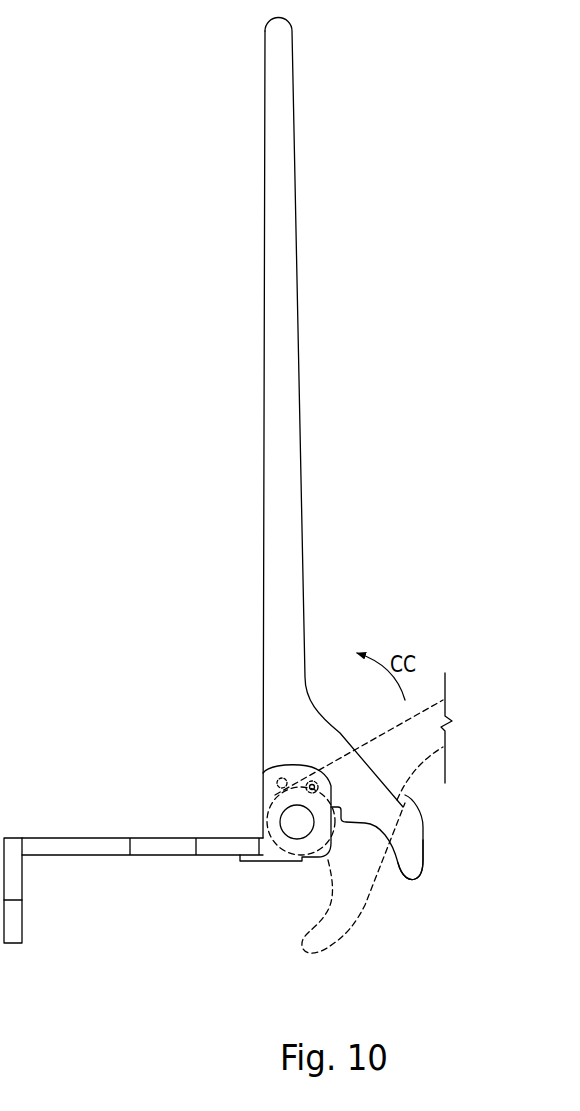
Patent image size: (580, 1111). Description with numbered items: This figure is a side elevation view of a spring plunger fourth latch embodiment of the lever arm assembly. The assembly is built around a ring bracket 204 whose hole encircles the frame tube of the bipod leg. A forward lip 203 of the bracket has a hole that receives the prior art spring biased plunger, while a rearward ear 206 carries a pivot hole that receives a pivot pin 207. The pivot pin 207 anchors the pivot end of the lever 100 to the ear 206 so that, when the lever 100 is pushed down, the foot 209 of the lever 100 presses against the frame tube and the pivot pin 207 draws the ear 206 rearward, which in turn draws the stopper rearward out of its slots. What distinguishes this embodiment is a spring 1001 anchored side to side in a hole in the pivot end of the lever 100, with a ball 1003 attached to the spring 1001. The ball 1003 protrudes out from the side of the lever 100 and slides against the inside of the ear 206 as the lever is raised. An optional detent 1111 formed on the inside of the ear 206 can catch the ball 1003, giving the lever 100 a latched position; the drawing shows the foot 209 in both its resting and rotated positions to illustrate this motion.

The lever 100 is at (287, 467).
The forward lip 203 is at (22, 885).
The ring bracket 204 is at (103, 837).
The rearward ear 206 is at (310, 771).
The pivot pin 207 is at (287, 840).
The foot 209 is at (403, 872).
The spring 1001 is at (320, 786).
The ball 1003 is at (308, 783).
The detent 1111 is at (277, 787).